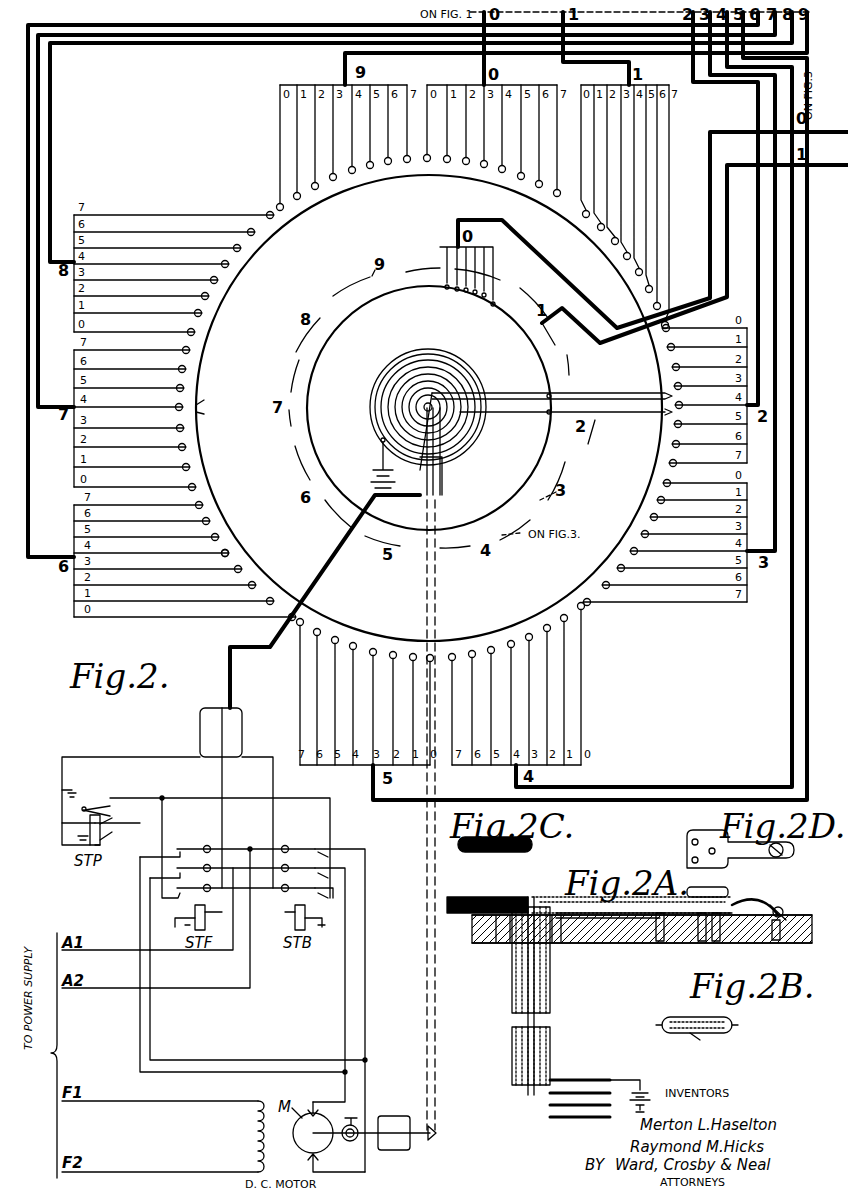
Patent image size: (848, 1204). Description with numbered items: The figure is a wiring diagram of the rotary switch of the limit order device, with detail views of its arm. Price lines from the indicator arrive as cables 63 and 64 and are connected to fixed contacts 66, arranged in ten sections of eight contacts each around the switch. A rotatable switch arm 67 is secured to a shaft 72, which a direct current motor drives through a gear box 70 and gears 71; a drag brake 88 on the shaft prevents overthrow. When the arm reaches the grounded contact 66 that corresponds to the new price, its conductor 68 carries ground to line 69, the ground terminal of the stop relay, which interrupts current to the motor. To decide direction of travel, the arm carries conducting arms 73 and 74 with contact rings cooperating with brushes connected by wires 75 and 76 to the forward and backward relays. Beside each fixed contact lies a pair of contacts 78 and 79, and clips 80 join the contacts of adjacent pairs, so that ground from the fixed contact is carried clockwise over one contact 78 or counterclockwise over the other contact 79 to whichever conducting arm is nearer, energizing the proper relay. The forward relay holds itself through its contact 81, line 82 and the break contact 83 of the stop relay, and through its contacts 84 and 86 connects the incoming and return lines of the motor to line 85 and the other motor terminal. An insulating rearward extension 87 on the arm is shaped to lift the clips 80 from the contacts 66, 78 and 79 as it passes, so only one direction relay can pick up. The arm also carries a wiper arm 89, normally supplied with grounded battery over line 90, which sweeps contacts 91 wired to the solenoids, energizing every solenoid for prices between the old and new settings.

In FIG. 2, the cable 63 is at (482, 60).
In FIG. 2, the cable 64 is at (572, 70).
In FIG. 2, the fixed contacts 66 is at (178, 405).
In FIG. 2A, the fixed contacts 66 is at (742, 943).
In FIG. 2, the rotatable switch arm 67 is at (590, 442).
In FIG. 2A, the rotatable switch arm 67 is at (568, 896).
In FIG. 2, the conductor 68 is at (598, 390).
In FIG. 2A, the conductor 68 is at (680, 896).
In FIG. 2B, the conductor 68 is at (675, 1018).
In FIG. 2, the line 69 is at (128, 757).
In FIG. 2A, the line 69 is at (585, 1118).
In FIG. 2, the gear box 70 is at (392, 1118).
In FIG. 2, the gears 71 is at (436, 1135).
In FIG. 2, the shaft 72 is at (440, 1000).
In FIG. 2A, the shaft 72 is at (528, 1125).
In FIG. 2, the conducting arm 73 is at (618, 413).
In FIG. 2B, the conducting arm 73 is at (647, 1025).
In FIG. 2, the conducting arm 74 is at (512, 395).
In FIG. 2B, the conducting arm 74 is at (746, 1025).
In FIG. 2, the wire 75 is at (224, 778).
In FIG. 2A, the wire 75 is at (600, 1093).
In FIG. 2, the wire 76 is at (274, 780).
In FIG. 2A, the wire 76 is at (585, 1080).
In FIG. 2, the contact 78 is at (690, 448).
In FIG. 2A, the contact 78 is at (702, 943).
In FIG. 2, the contact 79 is at (688, 410).
In FIG. 2D, the clips 80 is at (770, 860).
In FIG. 2A, the clips 80 is at (760, 900).
In FIG. 2, the contact 81 is at (210, 887).
In FIG. 2, the line 82 is at (170, 798).
In FIG. 2, the break contact 83 is at (108, 812).
In FIG. 2, the contact 84 is at (210, 867).
In FIG. 2, the line 85 is at (150, 966).
In FIG. 2, the contact 86 is at (208, 848).
In FIG. 2C, the rearward extension 87 is at (500, 852).
In FIG. 2A, the rearward extension 87 is at (480, 897).
In FIG. 2, the drag brake 88 is at (355, 1140).
In FIG. 2, the wiper arm 89 is at (510, 412).
In FIG. 2A, the wiper arm 89 is at (660, 918).
In FIG. 2B, the wiper arm 89 is at (704, 1045).
In FIG. 2, the line 90 is at (378, 457).
In FIG. 2A, the line 90 is at (632, 1082).
In FIG. 2, the contacts 91 is at (546, 413).
In FIG. 2A, the contacts 91 is at (660, 943).